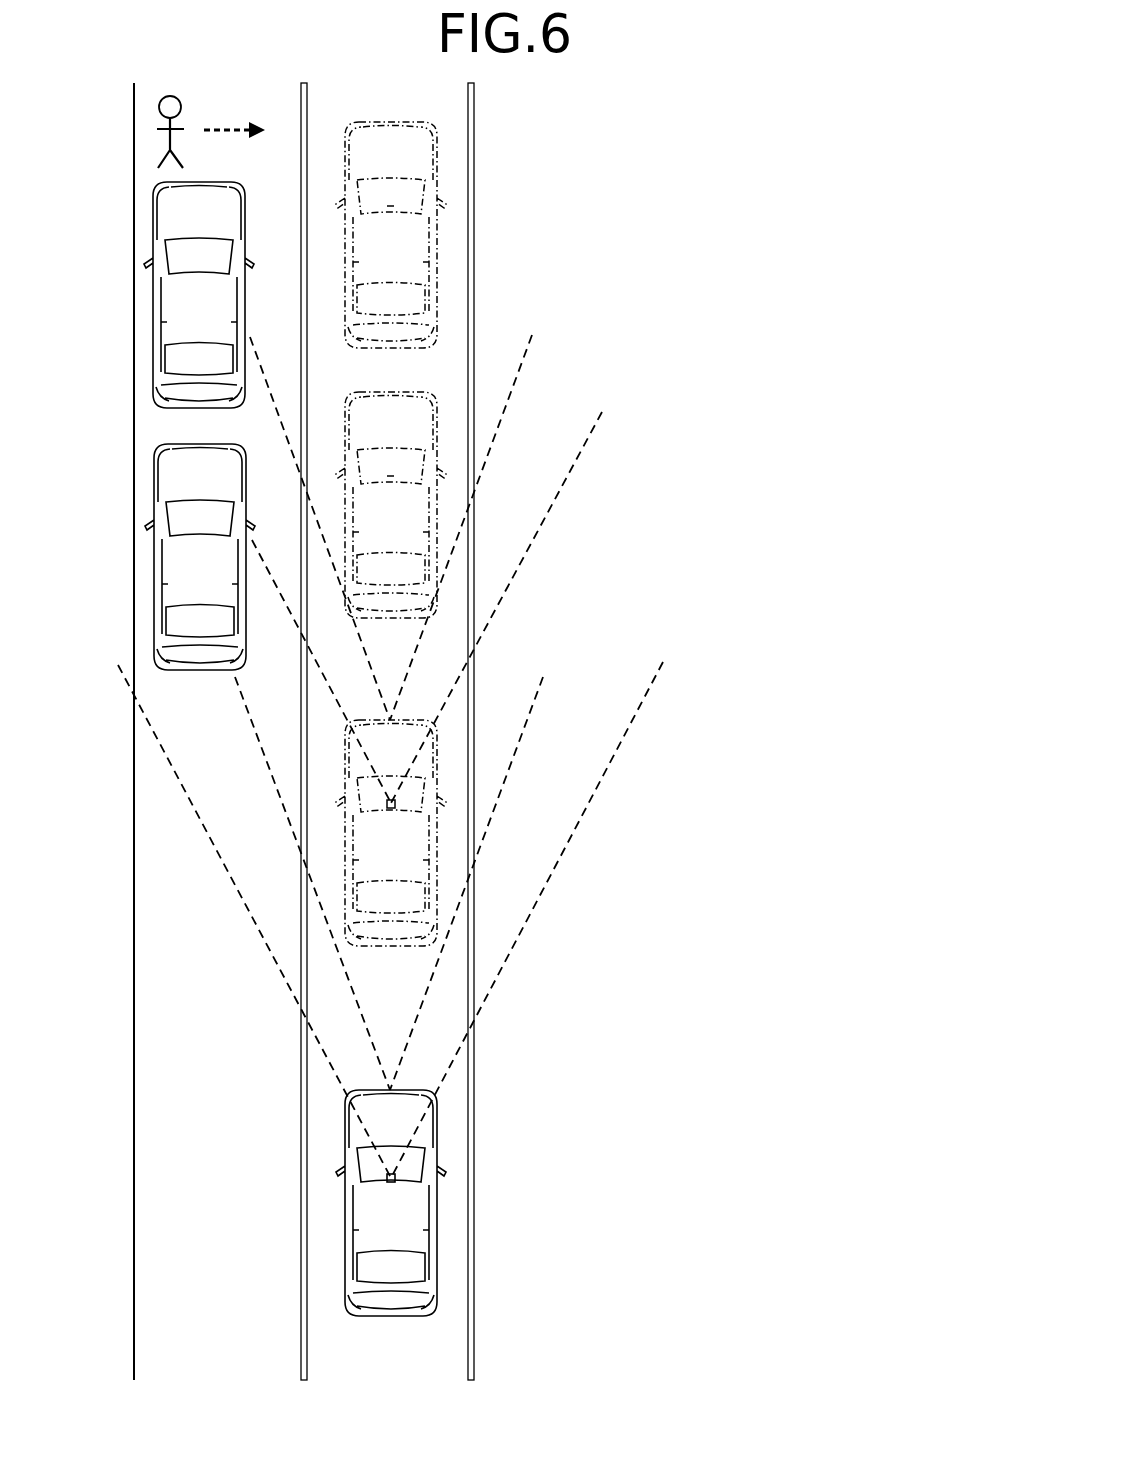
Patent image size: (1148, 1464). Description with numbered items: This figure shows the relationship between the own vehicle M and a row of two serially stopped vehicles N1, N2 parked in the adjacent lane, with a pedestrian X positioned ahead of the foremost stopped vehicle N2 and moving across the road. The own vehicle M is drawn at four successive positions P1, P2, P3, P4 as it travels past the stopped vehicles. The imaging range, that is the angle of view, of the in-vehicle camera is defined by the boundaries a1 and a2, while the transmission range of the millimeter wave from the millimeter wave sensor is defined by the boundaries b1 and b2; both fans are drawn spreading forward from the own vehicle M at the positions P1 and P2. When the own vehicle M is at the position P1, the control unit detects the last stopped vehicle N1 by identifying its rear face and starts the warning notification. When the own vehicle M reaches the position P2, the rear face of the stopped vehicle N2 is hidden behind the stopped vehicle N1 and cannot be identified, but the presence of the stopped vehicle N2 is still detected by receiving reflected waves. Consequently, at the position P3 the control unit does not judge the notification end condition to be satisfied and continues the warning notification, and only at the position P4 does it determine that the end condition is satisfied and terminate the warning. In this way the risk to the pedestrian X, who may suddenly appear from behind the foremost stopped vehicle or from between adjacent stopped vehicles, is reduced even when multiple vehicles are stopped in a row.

The pedestrian X is at (158, 107).
The stopped vehicle N1 is at (154, 540).
The stopped vehicle N2 is at (153, 262).
The own vehicle M is at (392, 348).
The imaging range boundary a1 is at (545, 883).
The imaging range boundary a2 is at (232, 880).
The transmission range boundary b1 is at (518, 749).
The transmission range boundary b2 is at (262, 747).
The position P1 is at (396, 1090).
The position P2 is at (420, 720).
The position P3 is at (396, 391).
The position P4 is at (396, 122).